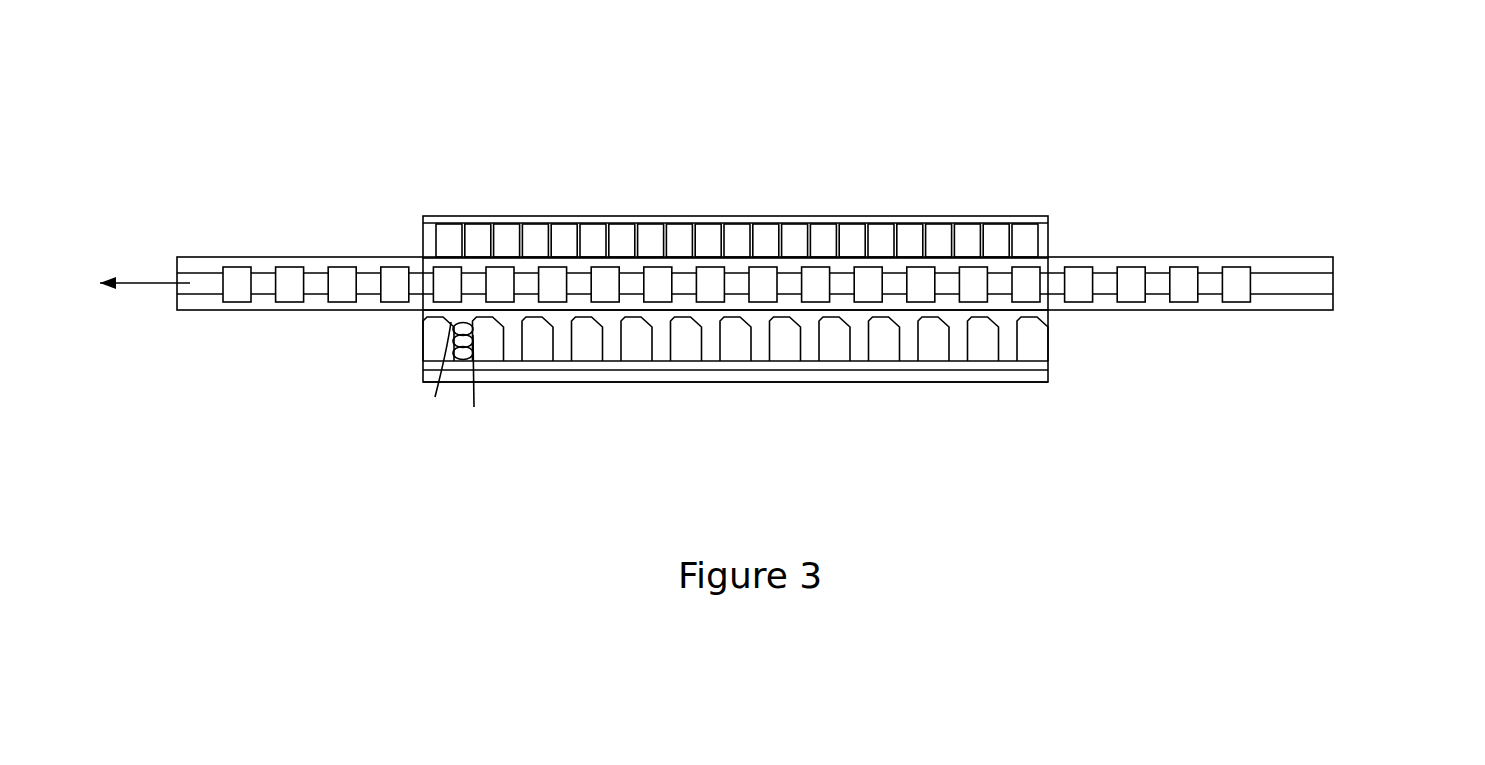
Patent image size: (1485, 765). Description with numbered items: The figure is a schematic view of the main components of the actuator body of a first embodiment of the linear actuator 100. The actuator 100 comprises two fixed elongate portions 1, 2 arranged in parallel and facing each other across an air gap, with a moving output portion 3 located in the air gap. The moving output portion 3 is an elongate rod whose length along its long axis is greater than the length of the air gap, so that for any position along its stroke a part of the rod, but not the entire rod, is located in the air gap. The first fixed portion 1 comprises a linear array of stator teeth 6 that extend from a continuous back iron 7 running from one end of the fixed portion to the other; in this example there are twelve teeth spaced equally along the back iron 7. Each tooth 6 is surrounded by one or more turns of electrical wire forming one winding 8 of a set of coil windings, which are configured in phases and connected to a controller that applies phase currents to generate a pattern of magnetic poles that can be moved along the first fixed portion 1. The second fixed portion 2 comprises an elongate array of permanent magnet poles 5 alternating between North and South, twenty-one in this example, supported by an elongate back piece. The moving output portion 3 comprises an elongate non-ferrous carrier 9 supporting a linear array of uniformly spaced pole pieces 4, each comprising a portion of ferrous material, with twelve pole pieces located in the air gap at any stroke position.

The linear actuator 100 is at (784, 255).
The first fixed elongate portion 1 is at (642, 400).
The second fixed elongate portion 2 is at (647, 187).
The moving output portion 3 is at (784, 290).
The pole piece 4 is at (804, 336).
The permanent magnet pole 5 is at (443, 219).
The stator tooth 6 is at (442, 328).
The back iron 7 is at (903, 366).
The winding 8 is at (473, 406).
The carrier 9 is at (1320, 257).